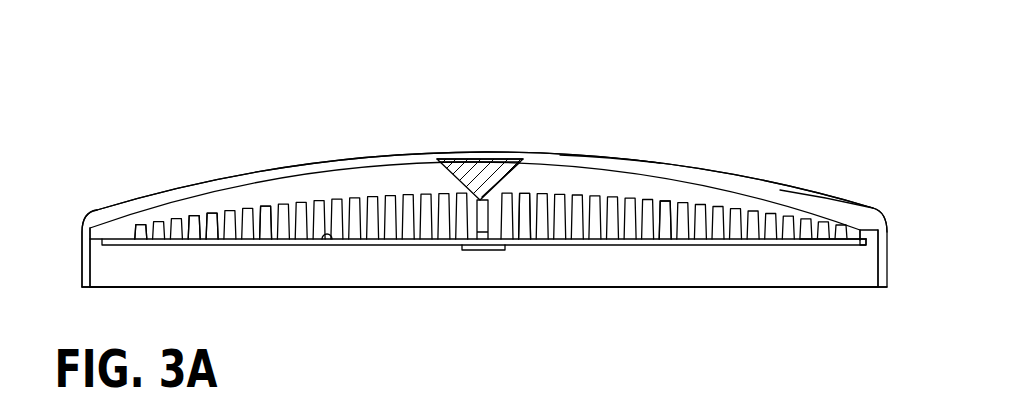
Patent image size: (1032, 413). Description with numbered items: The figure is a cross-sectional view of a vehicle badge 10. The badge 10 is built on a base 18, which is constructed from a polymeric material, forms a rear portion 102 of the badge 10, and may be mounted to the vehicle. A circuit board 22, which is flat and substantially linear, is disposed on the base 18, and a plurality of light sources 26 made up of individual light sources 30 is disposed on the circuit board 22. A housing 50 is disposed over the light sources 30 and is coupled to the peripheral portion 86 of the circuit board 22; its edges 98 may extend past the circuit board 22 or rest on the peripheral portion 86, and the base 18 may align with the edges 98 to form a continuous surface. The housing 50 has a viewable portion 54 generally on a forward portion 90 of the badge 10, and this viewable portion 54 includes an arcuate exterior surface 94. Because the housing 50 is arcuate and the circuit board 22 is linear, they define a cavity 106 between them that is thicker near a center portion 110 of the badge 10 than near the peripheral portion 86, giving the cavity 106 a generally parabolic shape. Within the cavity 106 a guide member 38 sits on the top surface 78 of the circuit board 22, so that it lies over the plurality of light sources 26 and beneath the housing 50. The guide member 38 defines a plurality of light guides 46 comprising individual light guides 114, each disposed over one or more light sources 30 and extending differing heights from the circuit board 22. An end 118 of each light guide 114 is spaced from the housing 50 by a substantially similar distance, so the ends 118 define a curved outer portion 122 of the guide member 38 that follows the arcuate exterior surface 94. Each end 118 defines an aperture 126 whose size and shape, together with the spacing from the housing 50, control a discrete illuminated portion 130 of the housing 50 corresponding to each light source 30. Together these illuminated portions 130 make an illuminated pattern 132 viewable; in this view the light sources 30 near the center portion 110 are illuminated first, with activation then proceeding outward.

The vehicle badge 10 is at (842, 107).
The base 18 is at (797, 263).
The circuit board 22 is at (692, 245).
The plurality of light sources 26 is at (138, 238).
The light source 30 is at (827, 240).
The guide member 38 is at (633, 241).
The plurality of light guides 46 is at (738, 205).
The housing 50 is at (822, 192).
The viewable portion 54 is at (613, 158).
The top surface 78 is at (327, 241).
The peripheral portion 86 is at (858, 238).
The forward portion 90 is at (396, 162).
The arcuate exterior surface 94 is at (318, 158).
The edges 98 is at (83, 283).
The rear portion 102 is at (460, 288).
The cavity 106 is at (665, 190).
The center portion 110 is at (490, 250).
The light guide 114 is at (528, 196).
The end 118 is at (272, 208).
The curved outer portion 122 is at (185, 222).
The aperture 126 is at (210, 218).
The illuminated portion 130 is at (492, 160).
The illuminated pattern 132 is at (450, 148).